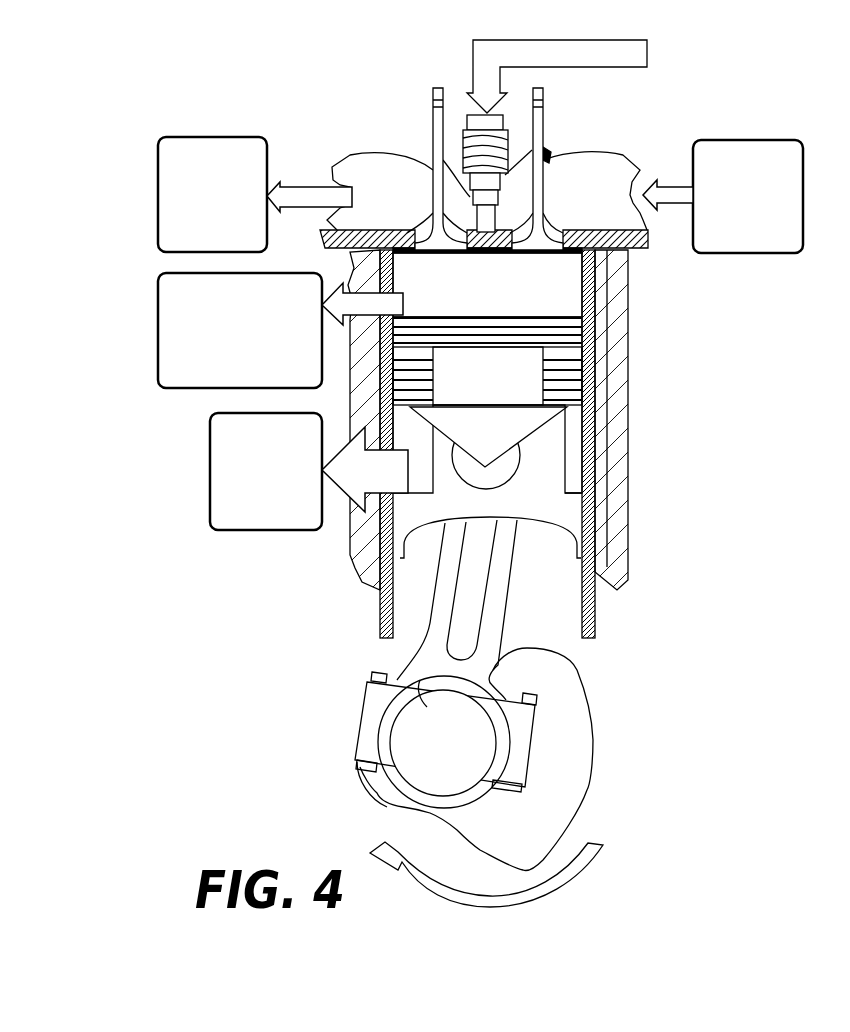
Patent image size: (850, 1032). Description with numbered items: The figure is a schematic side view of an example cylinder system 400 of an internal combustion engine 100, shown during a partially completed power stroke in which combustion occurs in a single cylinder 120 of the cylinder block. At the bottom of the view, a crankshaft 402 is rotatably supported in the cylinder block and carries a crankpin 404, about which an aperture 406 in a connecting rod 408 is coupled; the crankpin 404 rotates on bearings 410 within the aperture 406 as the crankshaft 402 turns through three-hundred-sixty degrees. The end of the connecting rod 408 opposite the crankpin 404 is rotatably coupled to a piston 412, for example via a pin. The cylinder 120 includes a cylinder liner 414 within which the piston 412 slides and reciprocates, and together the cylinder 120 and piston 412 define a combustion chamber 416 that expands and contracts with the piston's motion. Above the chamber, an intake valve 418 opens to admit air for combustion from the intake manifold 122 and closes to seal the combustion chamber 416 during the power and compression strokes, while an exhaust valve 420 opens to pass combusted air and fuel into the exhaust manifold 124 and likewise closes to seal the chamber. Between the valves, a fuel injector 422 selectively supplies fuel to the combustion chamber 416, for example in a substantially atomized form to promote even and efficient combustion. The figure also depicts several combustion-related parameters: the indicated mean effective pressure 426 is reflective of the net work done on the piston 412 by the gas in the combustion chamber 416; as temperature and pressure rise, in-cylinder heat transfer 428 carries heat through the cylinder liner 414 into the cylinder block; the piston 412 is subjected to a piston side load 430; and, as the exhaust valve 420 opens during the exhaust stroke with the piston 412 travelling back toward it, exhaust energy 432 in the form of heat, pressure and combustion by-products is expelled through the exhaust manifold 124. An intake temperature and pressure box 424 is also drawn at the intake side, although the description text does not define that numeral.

The internal combustion engine 100 is at (680, 407).
The cylinder 120 is at (500, 295).
The intake manifold 122 is at (623, 217).
The exhaust manifold 124 is at (397, 173).
The cylinder system 400 is at (362, 53).
The crankshaft 402 is at (578, 708).
The crankpin 404 is at (470, 777).
The aperture 406 is at (427, 695).
The connecting rod 408 is at (487, 640).
The bearings 410 is at (402, 787).
The piston 412 is at (573, 462).
The cylinder liner 414 is at (590, 513).
The combustion chamber 416 is at (563, 303).
The intake valve 418 is at (544, 90).
The exhaust valve 420 is at (435, 87).
The fuel injector 422 is at (480, 113).
The intake temperature and pressure 424 is at (762, 243).
The indicated mean effective pressure 426 is at (500, 415).
The in-cylinder heat transfer 428 is at (254, 365).
The piston side load 430 is at (280, 507).
The exhaust energy 432 is at (226, 230).